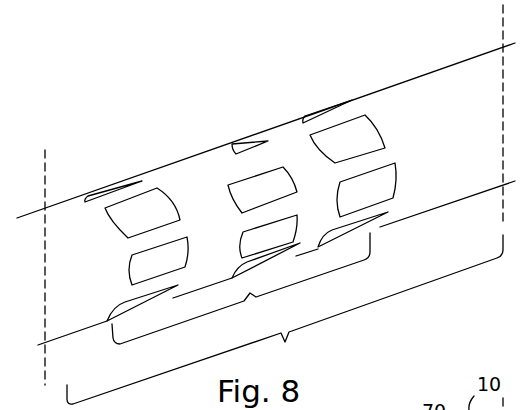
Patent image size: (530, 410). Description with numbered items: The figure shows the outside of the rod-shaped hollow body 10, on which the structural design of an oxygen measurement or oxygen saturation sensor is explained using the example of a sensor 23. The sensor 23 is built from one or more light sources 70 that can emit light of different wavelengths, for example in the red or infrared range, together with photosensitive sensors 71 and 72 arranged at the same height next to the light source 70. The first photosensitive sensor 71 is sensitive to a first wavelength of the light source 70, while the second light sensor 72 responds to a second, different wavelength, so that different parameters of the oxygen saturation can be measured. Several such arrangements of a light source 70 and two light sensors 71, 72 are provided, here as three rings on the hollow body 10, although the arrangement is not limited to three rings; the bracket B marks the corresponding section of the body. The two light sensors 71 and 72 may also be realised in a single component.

The rod-shaped hollow body 10 is at (428, 139).
The sensor 23 is at (241, 288).
The light source 70 is at (140, 211).
The first photosensitive sensor 71 is at (100, 194).
The second light sensor 72 is at (176, 286).
The section length B is at (285, 319).